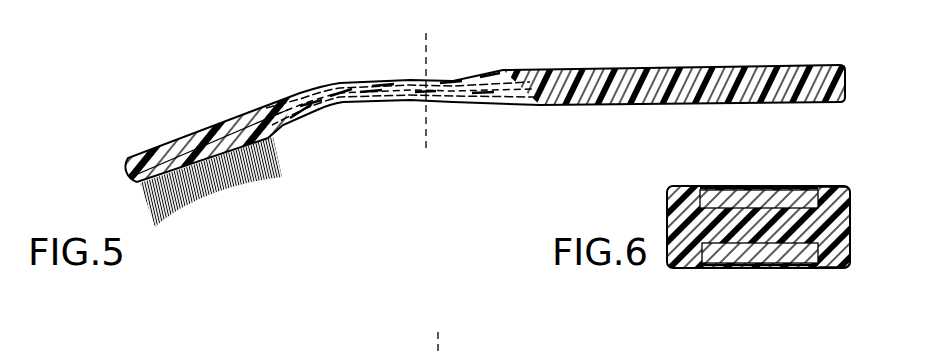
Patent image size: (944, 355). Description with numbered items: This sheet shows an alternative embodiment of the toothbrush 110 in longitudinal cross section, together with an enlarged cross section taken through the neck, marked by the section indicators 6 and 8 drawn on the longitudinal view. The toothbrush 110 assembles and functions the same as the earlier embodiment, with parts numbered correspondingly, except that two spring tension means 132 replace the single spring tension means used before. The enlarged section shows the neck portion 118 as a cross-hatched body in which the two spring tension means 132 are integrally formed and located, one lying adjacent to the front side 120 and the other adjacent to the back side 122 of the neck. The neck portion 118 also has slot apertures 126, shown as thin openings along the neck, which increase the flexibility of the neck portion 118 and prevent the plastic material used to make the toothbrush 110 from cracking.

In FIG. 5, the toothbrush 110 is at (220, 59).
In FIG. 5, the section line 6- 6 is at (432, 38).
In FIG. 5, the section line 8- 8 is at (444, 347).
In FIG. 6, the neck portion 118 is at (843, 219).
In FIG. 6, the front side 120 is at (830, 268).
In FIG. 6, the back side 122 is at (831, 186).
In FIG. 6, the slot apertures 126 is at (716, 186).
In FIG. 6, the spring tension means 132 is at (763, 192).